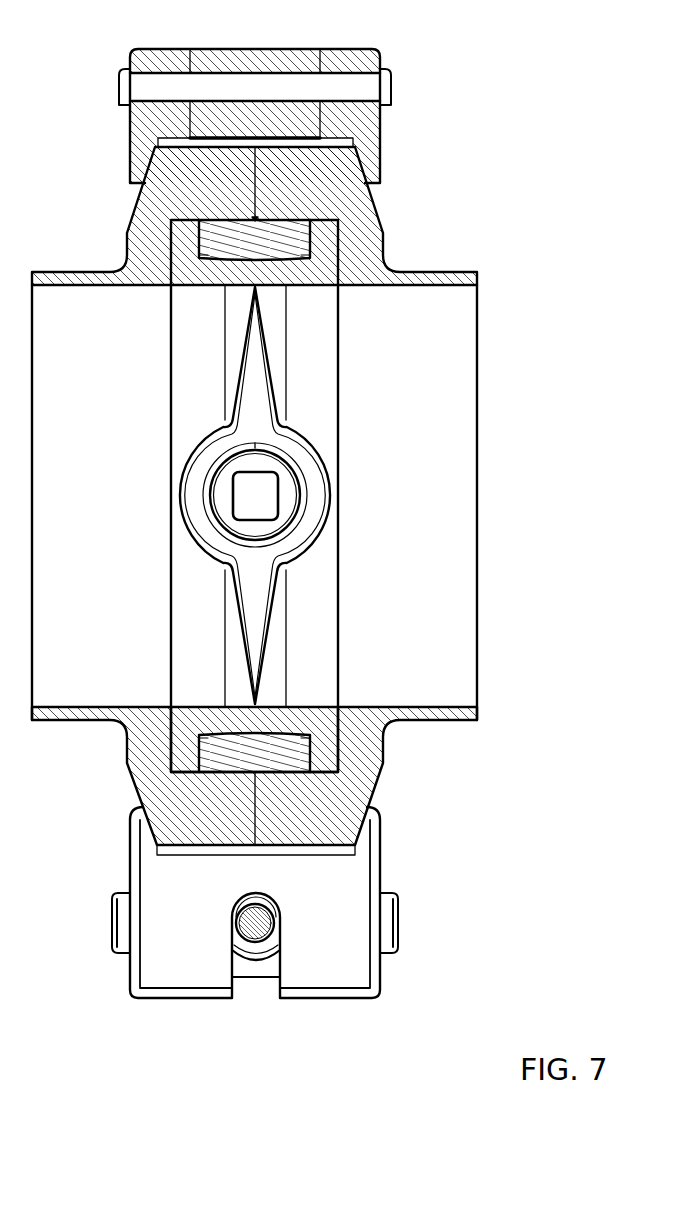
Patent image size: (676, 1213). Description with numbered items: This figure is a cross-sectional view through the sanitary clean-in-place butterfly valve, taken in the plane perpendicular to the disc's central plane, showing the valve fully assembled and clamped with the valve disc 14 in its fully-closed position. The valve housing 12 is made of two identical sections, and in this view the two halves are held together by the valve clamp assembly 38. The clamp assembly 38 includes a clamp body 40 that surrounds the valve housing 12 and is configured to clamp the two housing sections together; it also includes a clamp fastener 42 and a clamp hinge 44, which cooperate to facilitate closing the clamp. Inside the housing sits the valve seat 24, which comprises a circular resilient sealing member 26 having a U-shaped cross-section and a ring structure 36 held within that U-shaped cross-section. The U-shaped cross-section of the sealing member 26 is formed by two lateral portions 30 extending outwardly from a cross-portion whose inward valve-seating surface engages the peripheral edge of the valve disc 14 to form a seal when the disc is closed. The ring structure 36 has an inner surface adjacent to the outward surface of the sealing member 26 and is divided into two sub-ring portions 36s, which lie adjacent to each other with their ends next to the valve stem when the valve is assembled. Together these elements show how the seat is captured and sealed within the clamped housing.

The valve housing 12 is at (140, 240).
The valve disc 14 is at (250, 577).
The valve seat 24 is at (303, 655).
The circular resilient sealing member 26 is at (313, 308).
The lateral portions 30 is at (190, 750).
The ring structure 36 is at (301, 494).
The sub-ring portions 36s is at (220, 233).
The valve clamp assembly 38 is at (307, 116).
The clamp body 40 is at (363, 125).
The clamp fastener 42 is at (255, 930).
The clamp hinge 44 is at (183, 82).